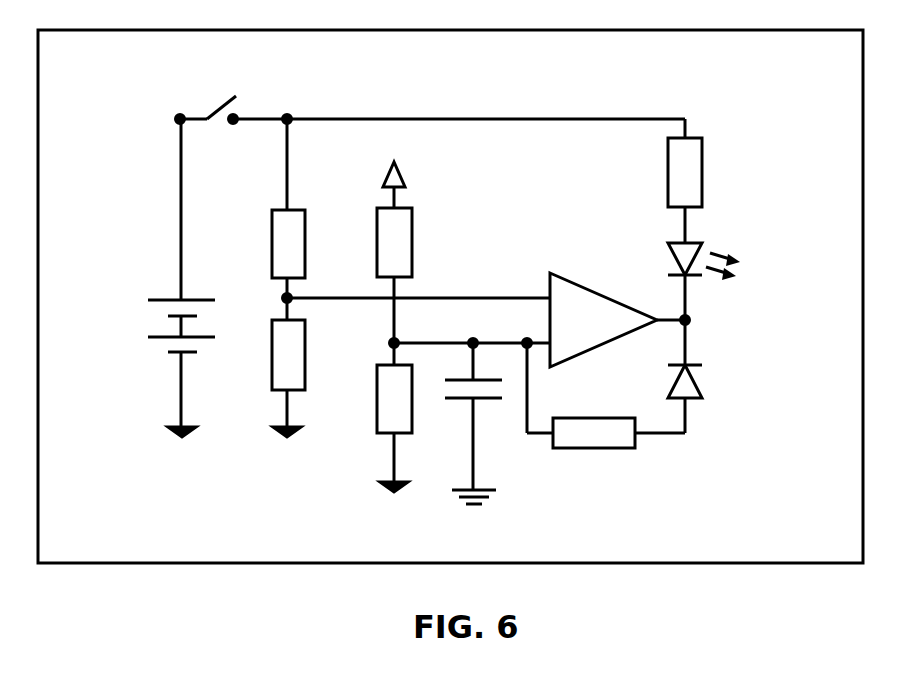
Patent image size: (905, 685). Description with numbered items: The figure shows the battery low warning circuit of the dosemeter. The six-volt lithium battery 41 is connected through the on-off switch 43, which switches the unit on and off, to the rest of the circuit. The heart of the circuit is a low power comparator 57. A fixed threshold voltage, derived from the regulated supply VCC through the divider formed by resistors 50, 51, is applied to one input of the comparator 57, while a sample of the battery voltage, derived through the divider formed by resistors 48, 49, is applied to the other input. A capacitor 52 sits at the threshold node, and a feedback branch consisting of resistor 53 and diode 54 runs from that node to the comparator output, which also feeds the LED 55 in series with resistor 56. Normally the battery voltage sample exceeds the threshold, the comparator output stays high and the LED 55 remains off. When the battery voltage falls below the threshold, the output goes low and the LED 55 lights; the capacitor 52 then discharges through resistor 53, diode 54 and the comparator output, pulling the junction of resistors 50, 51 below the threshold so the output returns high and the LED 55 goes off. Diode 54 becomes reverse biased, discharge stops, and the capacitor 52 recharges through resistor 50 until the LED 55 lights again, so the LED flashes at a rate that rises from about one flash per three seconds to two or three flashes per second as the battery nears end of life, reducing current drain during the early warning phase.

The lithium battery 41 is at (163, 278).
The on-off switch 43 is at (212, 129).
The resistor 48 is at (266, 265).
The resistor 49 is at (266, 378).
The resistor 50 is at (374, 253).
The resistor 51 is at (373, 428).
The capacitor 52 is at (471, 423).
The resistor 53 is at (594, 449).
The diode 54 is at (709, 381).
The LED 55 is at (724, 246).
The resistor 56 is at (708, 172).
The low power comparator 57 is at (603, 310).